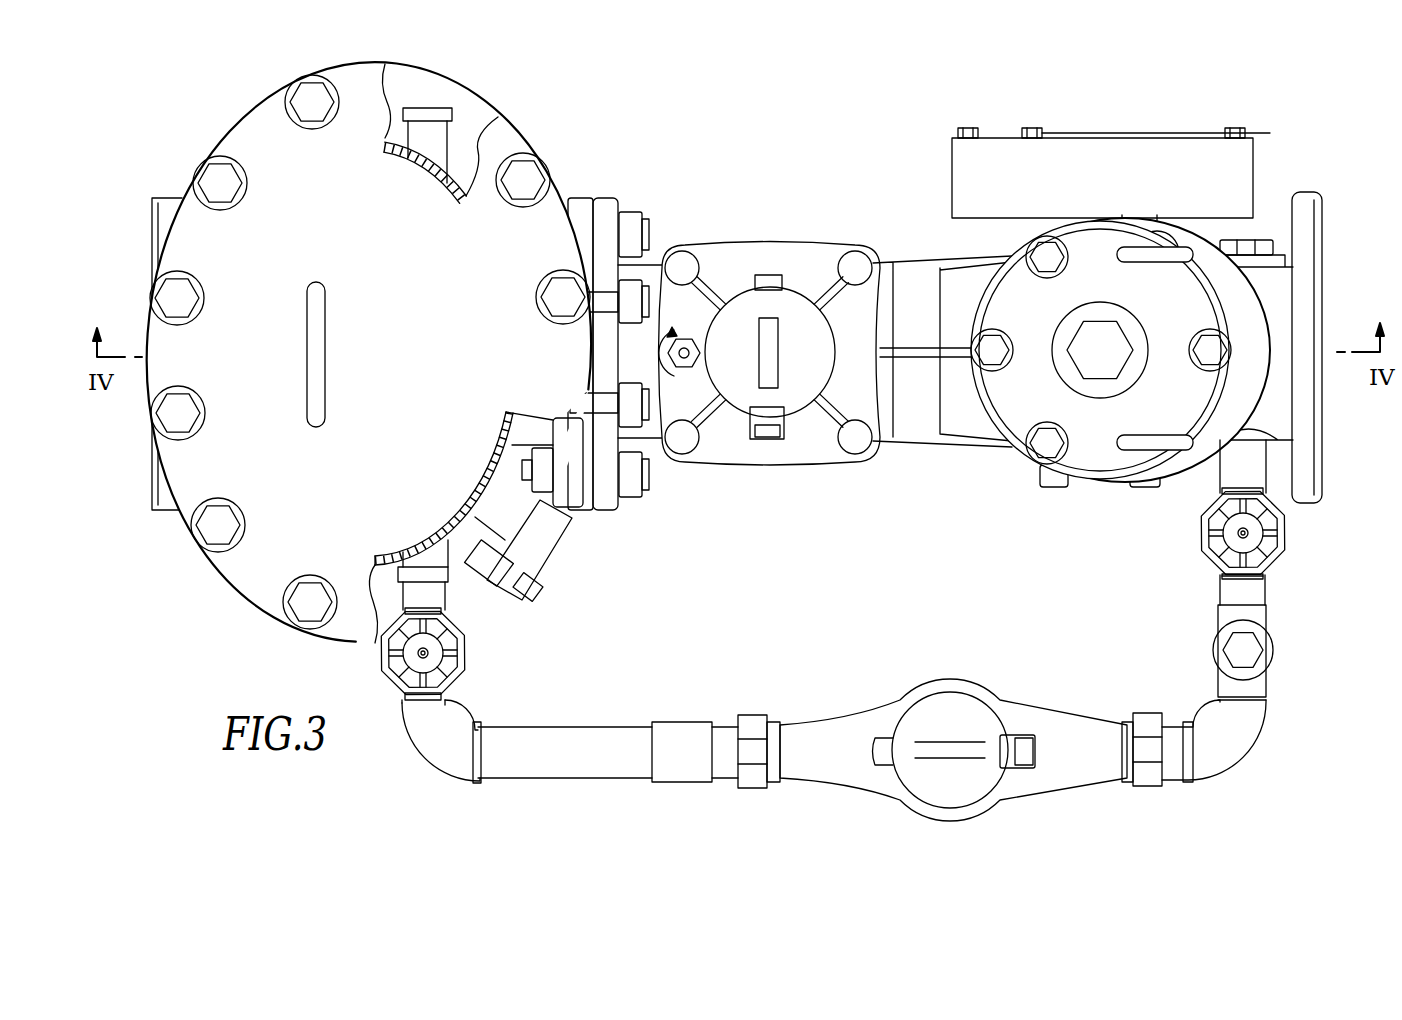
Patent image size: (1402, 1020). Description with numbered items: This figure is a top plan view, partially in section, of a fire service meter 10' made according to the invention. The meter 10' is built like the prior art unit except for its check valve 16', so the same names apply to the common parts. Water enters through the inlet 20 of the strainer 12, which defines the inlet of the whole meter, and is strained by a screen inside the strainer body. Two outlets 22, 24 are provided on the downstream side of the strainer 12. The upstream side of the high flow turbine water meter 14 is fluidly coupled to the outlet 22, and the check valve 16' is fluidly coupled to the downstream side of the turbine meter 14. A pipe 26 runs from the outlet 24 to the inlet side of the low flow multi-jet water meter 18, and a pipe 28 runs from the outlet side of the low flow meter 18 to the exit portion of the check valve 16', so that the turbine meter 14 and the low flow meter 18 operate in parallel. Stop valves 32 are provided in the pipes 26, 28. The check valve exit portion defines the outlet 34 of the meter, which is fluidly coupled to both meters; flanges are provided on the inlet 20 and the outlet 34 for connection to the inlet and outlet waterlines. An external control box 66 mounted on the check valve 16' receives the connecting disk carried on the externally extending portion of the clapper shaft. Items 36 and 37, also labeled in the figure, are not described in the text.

The fire service meter 10' is at (771, 94).
The strainer 12 is at (517, 125).
The high flow turbine water meter 14 is at (770, 243).
The check valve 16' is at (1132, 327).
The low flow multi-jet water meter 18 is at (892, 708).
The inlet 20 is at (173, 198).
The outlet 22 is at (572, 197).
The outlet 24 is at (447, 543).
The pipe 26 is at (558, 727).
The pipe 28 is at (1218, 690).
The stop valves 32 is at (452, 675).
The outlet 34 is at (1325, 266).
The register window 36 is at (945, 742).
The position indicator slot 37 is at (778, 337).
The external control box 66 is at (973, 135).